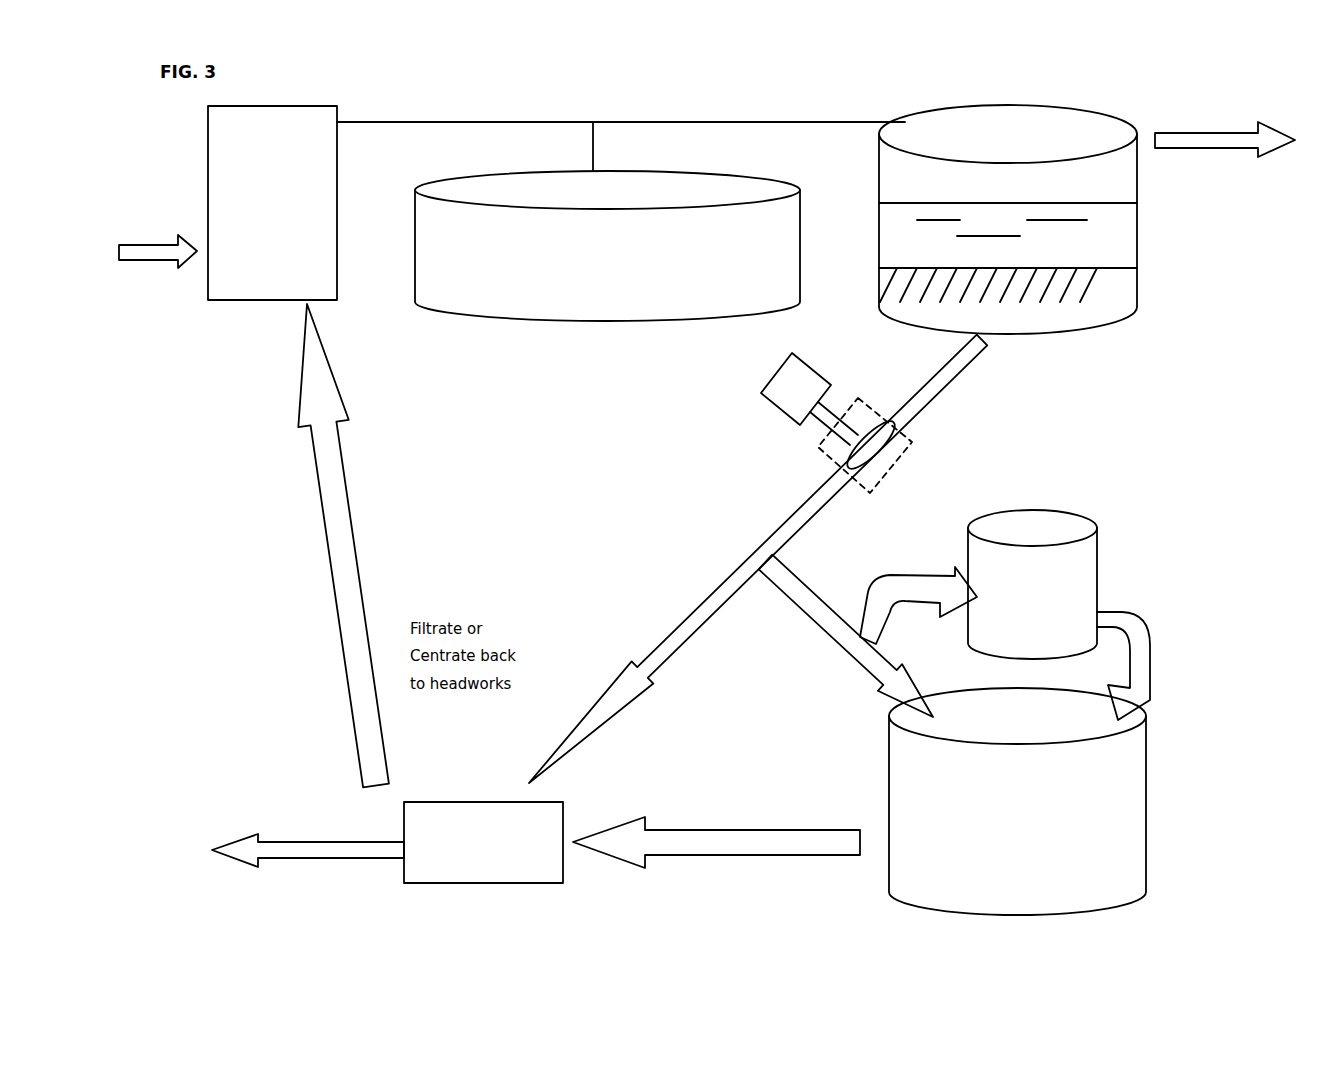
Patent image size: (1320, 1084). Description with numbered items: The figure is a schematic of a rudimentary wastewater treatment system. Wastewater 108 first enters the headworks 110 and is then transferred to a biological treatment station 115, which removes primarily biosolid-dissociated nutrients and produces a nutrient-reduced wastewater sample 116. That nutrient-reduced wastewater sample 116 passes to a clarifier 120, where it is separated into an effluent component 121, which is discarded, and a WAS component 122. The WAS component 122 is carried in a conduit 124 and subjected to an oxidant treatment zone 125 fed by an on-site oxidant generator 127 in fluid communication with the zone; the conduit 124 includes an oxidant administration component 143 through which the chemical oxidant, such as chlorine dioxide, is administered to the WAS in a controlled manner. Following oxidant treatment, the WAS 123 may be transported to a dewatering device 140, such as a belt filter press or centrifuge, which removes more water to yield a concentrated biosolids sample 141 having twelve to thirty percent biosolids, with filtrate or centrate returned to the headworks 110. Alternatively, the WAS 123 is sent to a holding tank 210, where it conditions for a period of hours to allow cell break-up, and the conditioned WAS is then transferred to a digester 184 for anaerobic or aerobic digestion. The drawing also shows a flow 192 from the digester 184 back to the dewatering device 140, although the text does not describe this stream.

The wastewater 108 is at (158, 274).
The headworks 110 is at (218, 203).
The biological treatment station 115 is at (505, 299).
The nutrient-reduced wastewater sample 116 is at (621, 146).
The clarifier 120 is at (1137, 235).
The effluent component 121 is at (1225, 143).
The WAS component 122 is at (781, 559).
The WAS 123 is at (820, 525).
The conduit 124 is at (938, 397).
The oxidant treatment zone 125 is at (892, 462).
The on-site oxidant generator 127 is at (800, 382).
The dewatering device 140 is at (484, 883).
The concentrated biosolids sample 141 is at (253, 873).
The oxidant administration component 143 is at (868, 447).
The digester 184 is at (1137, 897).
The digested sludge conduit 192 is at (732, 840).
The holding tank 210 is at (1097, 543).